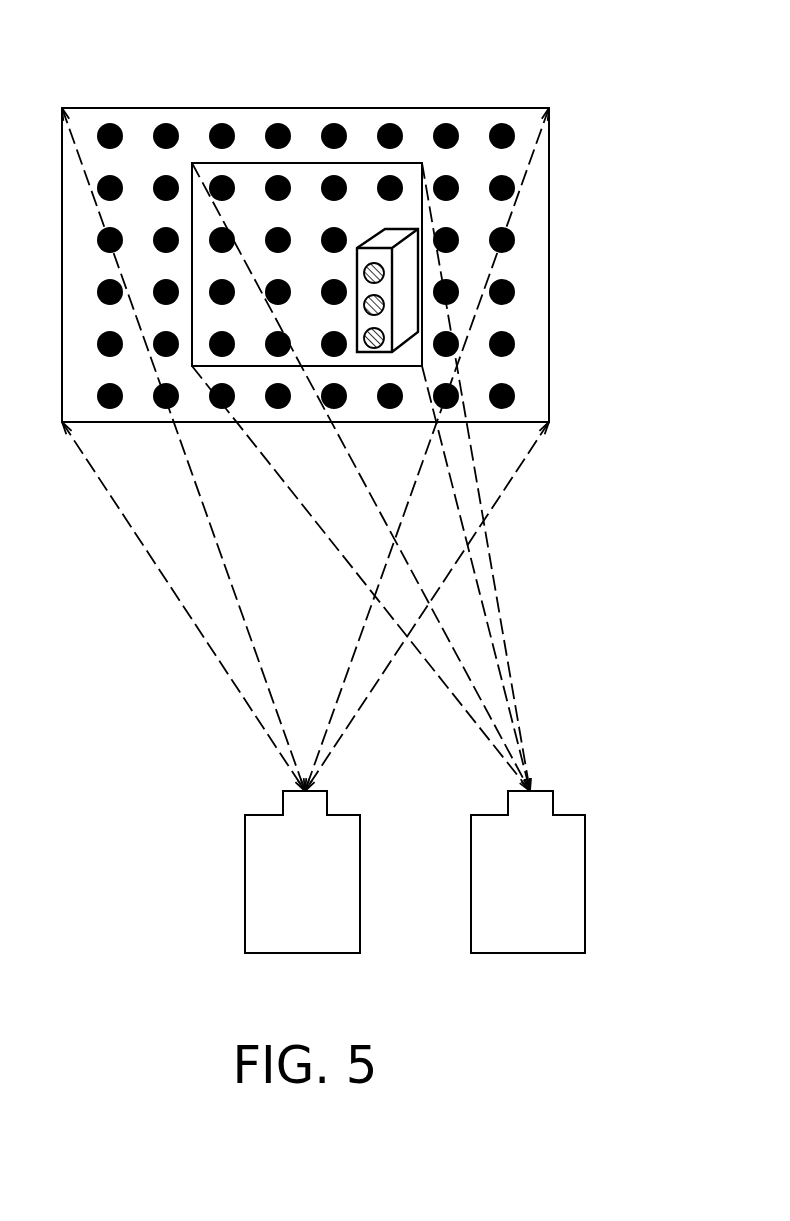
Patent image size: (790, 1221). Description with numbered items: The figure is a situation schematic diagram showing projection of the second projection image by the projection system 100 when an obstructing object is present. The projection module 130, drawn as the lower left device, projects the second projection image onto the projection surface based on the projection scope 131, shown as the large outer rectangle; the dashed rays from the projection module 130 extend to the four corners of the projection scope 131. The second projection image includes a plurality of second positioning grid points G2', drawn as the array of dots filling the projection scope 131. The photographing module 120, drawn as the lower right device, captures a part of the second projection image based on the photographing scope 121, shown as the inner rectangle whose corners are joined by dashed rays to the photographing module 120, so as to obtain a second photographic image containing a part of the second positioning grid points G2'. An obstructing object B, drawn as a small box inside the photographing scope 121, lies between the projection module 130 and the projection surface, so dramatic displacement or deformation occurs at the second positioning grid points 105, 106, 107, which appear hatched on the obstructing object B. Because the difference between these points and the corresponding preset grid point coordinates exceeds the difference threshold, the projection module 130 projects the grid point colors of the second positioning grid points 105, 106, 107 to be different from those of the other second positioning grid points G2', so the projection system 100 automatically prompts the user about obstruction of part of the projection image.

The projection system 100 is at (680, 92).
The projection scope 131 is at (482, 108).
The photographing scope 121 is at (362, 163).
The second positioning grid points G2' is at (297, 232).
The obstructing object B is at (400, 231).
The second positioning grid point 105 is at (385, 273).
The second positioning grid point 106 is at (385, 306).
The second positioning grid point 107 is at (387, 340).
The projection module 130 is at (302, 953).
The photographing module 120 is at (528, 953).